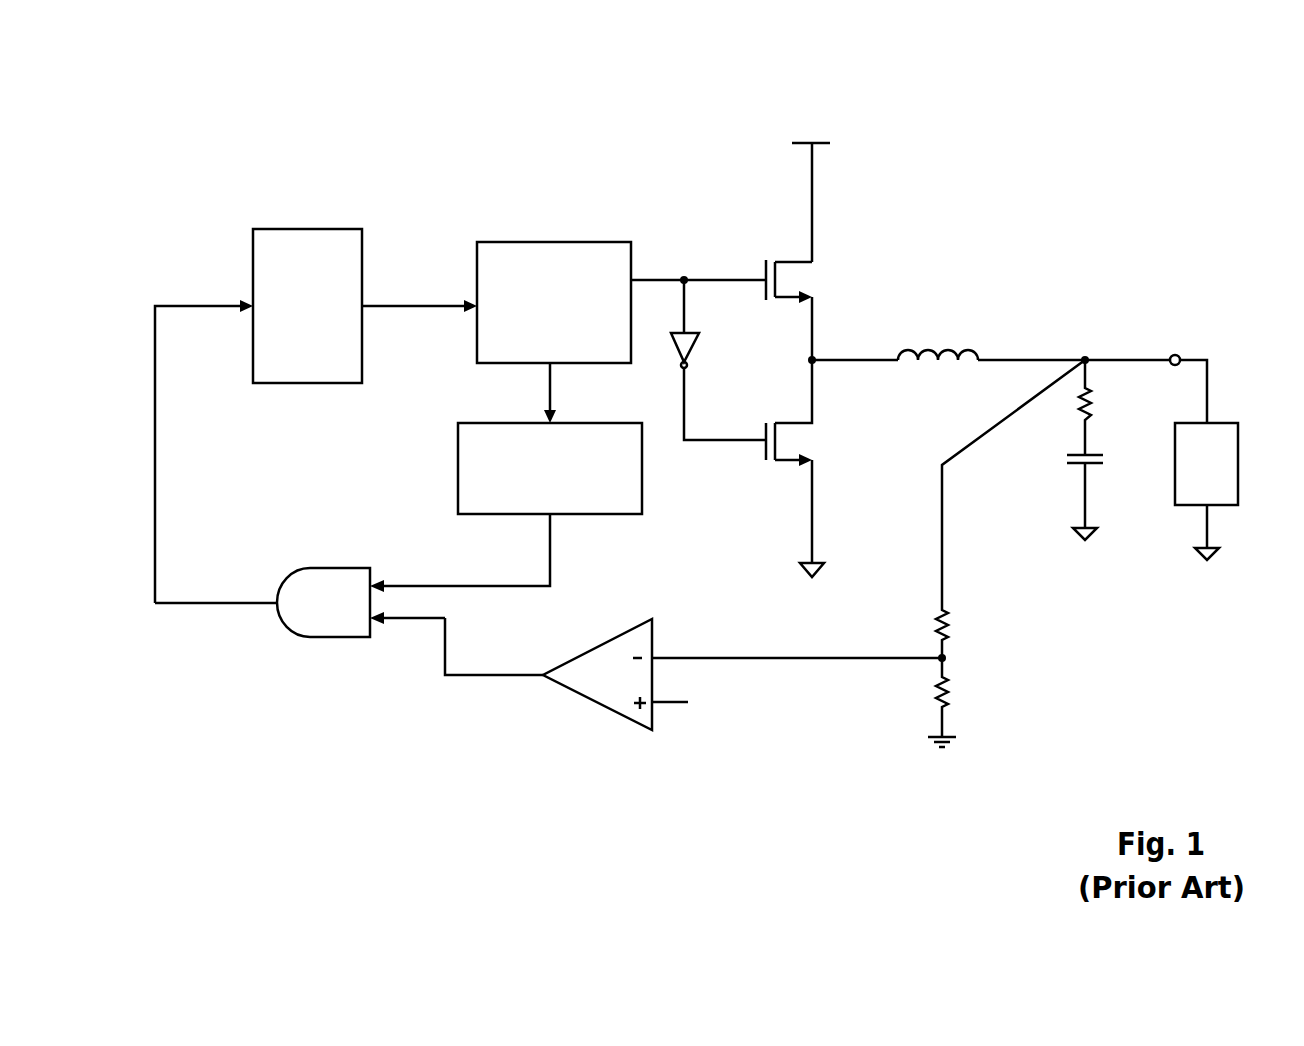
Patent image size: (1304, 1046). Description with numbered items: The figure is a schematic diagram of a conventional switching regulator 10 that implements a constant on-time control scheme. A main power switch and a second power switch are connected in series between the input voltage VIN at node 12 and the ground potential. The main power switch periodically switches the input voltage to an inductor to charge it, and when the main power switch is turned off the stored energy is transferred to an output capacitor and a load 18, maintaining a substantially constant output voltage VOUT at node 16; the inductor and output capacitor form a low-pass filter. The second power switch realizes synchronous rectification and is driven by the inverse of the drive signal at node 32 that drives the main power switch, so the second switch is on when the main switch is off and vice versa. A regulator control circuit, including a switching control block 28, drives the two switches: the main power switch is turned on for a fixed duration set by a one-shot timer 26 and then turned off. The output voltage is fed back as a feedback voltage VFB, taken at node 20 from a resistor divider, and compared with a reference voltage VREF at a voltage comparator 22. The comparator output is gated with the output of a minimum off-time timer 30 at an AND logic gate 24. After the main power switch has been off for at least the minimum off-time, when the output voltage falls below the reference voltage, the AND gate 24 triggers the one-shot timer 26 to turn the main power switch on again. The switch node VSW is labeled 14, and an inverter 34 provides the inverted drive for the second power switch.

The switching regulator 10 is at (1053, 64).
The input voltage node 12 is at (828, 146).
The switch node VSW 14 is at (815, 363).
The output voltage node 16 is at (1100, 360).
The load 18 is at (1225, 421).
The feedback voltage node VFB 20 is at (830, 657).
The voltage comparator 22 is at (585, 698).
The AND logic gate 24 is at (336, 637).
The one-shot timer 26 is at (347, 378).
The switching control 28 is at (624, 359).
The minimum off-time timer 30 is at (628, 509).
The drive signal node 32 is at (663, 277).
The inverter 34 is at (688, 366).